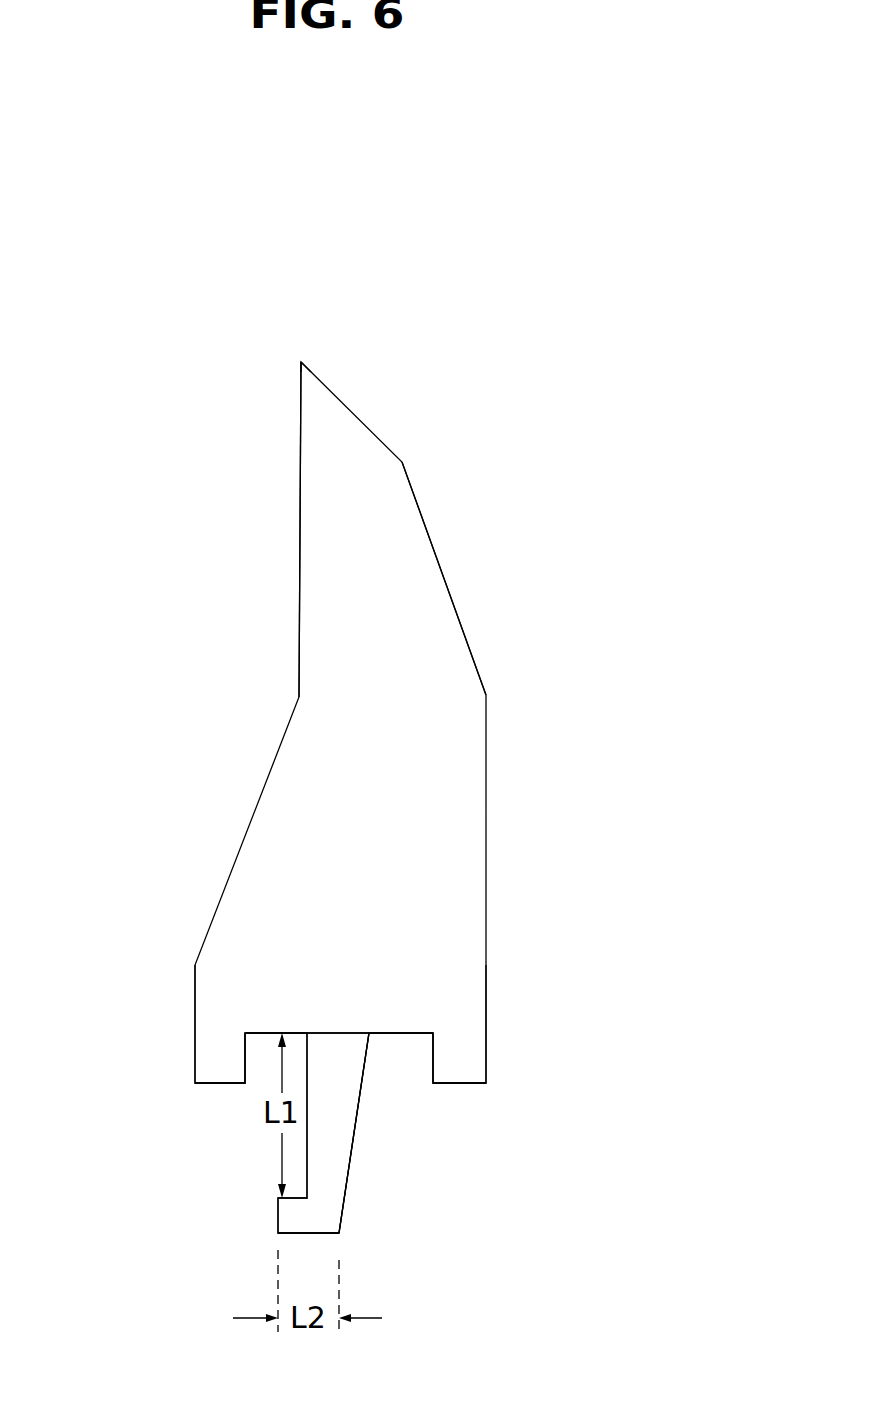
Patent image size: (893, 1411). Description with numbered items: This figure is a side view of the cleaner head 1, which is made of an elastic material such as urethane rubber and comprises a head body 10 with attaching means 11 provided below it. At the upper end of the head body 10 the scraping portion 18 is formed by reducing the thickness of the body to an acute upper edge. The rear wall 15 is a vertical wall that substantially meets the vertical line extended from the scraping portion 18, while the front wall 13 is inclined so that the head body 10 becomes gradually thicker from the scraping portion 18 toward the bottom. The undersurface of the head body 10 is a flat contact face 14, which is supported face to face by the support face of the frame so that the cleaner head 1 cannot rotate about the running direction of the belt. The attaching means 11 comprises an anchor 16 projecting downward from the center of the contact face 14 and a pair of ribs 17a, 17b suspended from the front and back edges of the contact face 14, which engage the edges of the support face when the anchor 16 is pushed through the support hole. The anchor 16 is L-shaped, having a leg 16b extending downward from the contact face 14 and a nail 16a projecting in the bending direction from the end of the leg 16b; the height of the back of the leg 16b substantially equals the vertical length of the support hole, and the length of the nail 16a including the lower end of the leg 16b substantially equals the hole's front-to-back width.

The cleaner head 1 is at (186, 308).
The head body 10 is at (342, 664).
The attaching means 11 is at (170, 1231).
The front wall 13 is at (452, 597).
The contact face 14 is at (397, 1035).
The rear wall 15 is at (299, 473).
The anchor 16 is at (454, 1170).
The nail 16a is at (297, 1233).
The leg 16b is at (360, 1112).
The rib 17a is at (462, 1083).
The rib 17b is at (220, 1083).
The scraping portion 18 is at (299, 352).